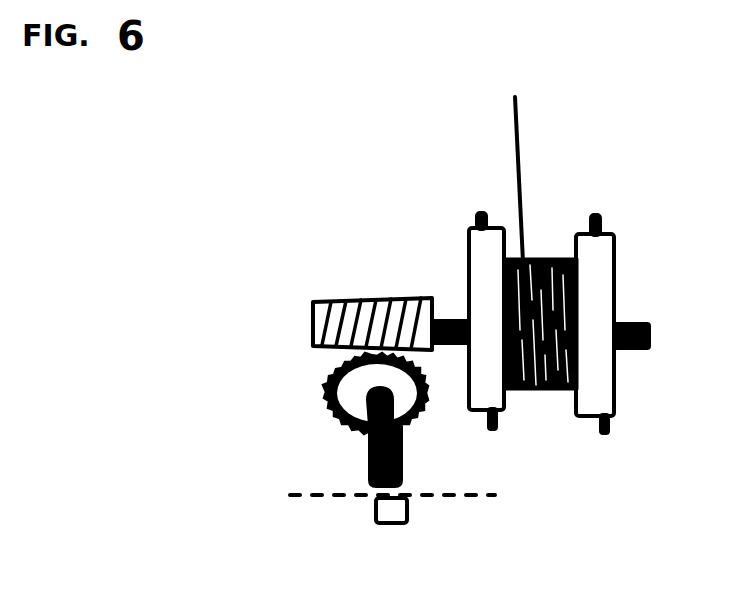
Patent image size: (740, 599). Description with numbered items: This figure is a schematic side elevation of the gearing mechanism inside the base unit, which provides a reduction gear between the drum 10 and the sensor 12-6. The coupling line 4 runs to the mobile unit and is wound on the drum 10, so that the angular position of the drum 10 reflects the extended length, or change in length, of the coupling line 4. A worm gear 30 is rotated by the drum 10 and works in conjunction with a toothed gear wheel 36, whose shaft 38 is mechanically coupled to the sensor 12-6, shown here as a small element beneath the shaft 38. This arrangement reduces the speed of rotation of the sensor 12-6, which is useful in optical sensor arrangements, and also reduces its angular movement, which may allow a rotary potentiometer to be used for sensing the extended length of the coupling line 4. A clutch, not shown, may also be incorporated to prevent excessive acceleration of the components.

The coupling line 4 is at (525, 190).
The drum 10 is at (617, 258).
The worm gear 30 is at (345, 300).
The toothed gear 36 is at (420, 425).
The shaft 38 is at (365, 455).
The sensor 12-6 is at (405, 527).